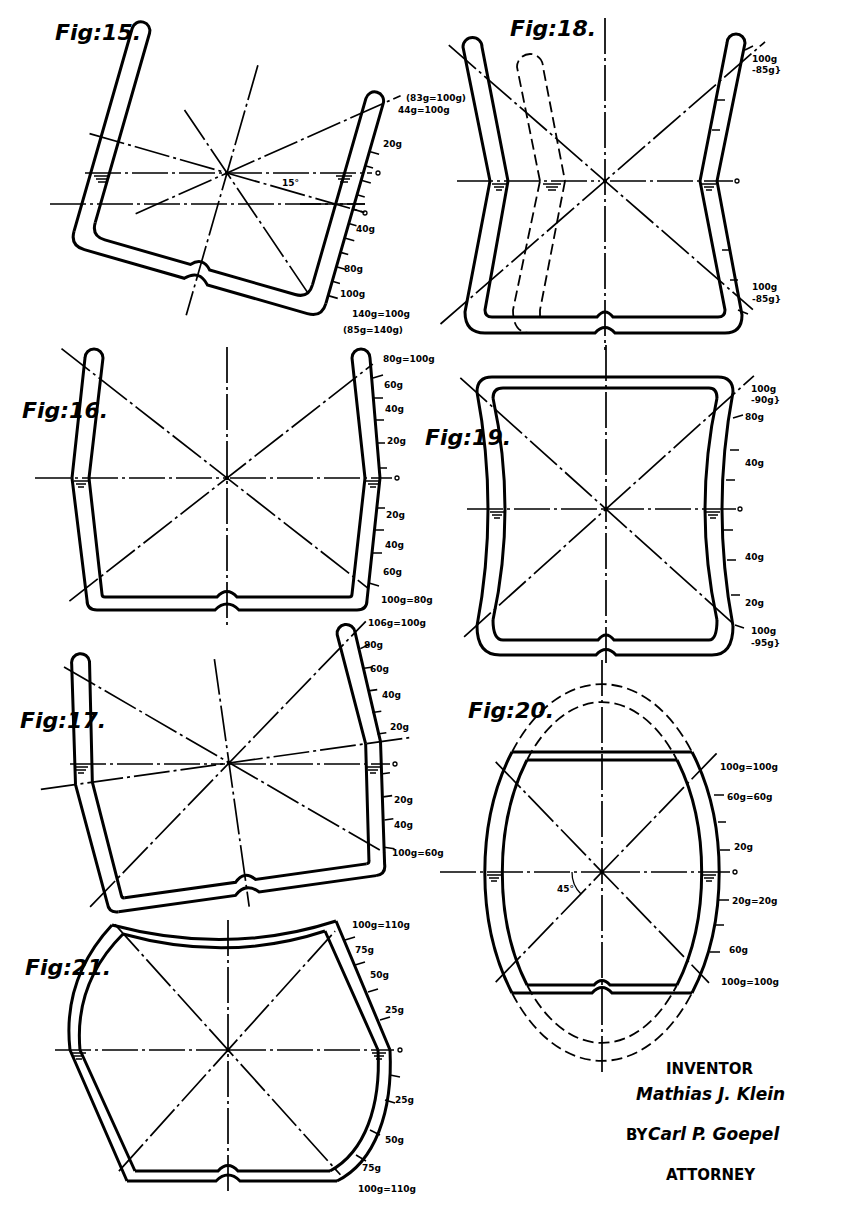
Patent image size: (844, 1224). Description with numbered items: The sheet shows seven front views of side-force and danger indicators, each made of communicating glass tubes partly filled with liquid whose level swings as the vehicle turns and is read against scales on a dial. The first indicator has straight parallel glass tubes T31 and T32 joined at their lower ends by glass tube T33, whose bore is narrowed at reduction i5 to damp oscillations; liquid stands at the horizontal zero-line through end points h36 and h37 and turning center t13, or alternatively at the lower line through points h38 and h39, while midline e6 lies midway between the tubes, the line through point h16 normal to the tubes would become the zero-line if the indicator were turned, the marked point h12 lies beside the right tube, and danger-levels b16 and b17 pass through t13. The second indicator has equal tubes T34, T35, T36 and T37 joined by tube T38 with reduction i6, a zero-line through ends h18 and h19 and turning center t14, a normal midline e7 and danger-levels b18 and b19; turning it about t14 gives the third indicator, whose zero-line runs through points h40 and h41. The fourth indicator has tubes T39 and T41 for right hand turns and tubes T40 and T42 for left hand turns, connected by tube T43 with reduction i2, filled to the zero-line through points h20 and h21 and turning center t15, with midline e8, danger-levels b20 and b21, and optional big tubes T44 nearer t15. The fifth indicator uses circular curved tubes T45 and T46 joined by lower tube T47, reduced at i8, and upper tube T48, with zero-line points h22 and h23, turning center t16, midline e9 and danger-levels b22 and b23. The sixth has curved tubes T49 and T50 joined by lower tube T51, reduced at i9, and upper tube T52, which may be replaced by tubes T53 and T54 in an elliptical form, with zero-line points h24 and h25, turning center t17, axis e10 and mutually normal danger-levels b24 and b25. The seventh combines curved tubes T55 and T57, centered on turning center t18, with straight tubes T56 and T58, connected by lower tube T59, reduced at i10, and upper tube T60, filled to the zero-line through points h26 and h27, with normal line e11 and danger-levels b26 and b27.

In FIG. 15, the communicating glass tube T31 is at (119, 130).
In FIG. 15, the communicating glass tube T32 is at (347, 197).
In FIG. 15, the connecting glass tube T33 is at (200, 268).
In FIG. 15, the danger-level b16 is at (246, 201).
In FIG. 15, the danger-level b17 is at (268, 154).
In FIG. 15, the turning center t13 is at (227, 173).
In FIG. 15, the midline e6 is at (222, 190).
In FIG. 15, the reduced tube portion i5 is at (198, 272).
In FIG. 15, the zero-line end point h36 is at (95, 172).
In FIG. 15, the zero-line end point h37 is at (248, 167).
In FIG. 15, the alternative fill-line end point h38 is at (204, 192).
In FIG. 15, the alternative fill-line end point h39 is at (349, 192).
In FIG. 15, the normal line end point h16 is at (227, 173).
In FIG. 15, the reference point h12 is at (383, 215).
In FIG. 18, the communicating glass tube T39 is at (480, 115).
In FIG. 18, the communicating glass tube T40 is at (482, 215).
In FIG. 18, the communicating glass tube T41 is at (707, 200).
In FIG. 18, the communicating glass tube T42 is at (718, 117).
In FIG. 18, the connecting glass tube T43 is at (670, 300).
In FIG. 18, the big tube T44 is at (565, 152).
In FIG. 18, the danger-level b20 is at (601, 177).
In FIG. 18, the danger-level b21 is at (603, 183).
In FIG. 18, the turning center t15 is at (606, 178).
In FIG. 18, the midline e8 is at (618, 184).
In FIG. 18, the reduced tube portion i2 is at (600, 318).
In FIG. 18, the zero-line end point h20 is at (527, 173).
In FIG. 18, the zero-line end point h21 is at (739, 181).
In FIG. 16, the communicating glass tube T34 is at (87, 413).
In FIG. 17, the communicating glass tube T34 is at (82, 719).
In FIG. 16, the communicating glass tube T35 is at (88, 544).
In FIG. 17, the communicating glass tube T35 is at (101, 847).
In FIG. 16, the communicating glass tube T36 is at (364, 544).
In FIG. 17, the communicating glass tube T36 is at (374, 809).
In FIG. 16, the communicating glass tube T37 is at (366, 413).
In FIG. 17, the communicating glass tube T37 is at (358, 684).
In FIG. 16, the connecting glass tube T38 is at (227, 601).
In FIG. 17, the connecting glass tube T38 is at (246, 884).
In FIG. 16, the danger-level b18 is at (215, 469).
In FIG. 17, the danger-level b18 is at (224, 760).
In FIG. 16, the danger-level b19 is at (355, 418).
In FIG. 17, the danger-level b19 is at (348, 683).
In FIG. 16, the turning center t14 is at (227, 478).
In FIG. 17, the turning center t14 is at (228, 762).
In FIG. 16, the midline e7 is at (238, 486).
In FIG. 17, the midline e7 is at (231, 783).
In FIG. 16, the reduced tube portion i6 is at (227, 601).
In FIG. 17, the reduced tube portion i6 is at (246, 885).
In FIG. 16, the zero-line end point h18 is at (66, 478).
In FIG. 17, the zero-line end point h18 is at (70, 788).
In FIG. 16, the zero-line end point h19 is at (399, 478).
In FIG. 17, the zero-line end point h19 is at (227, 763).
In FIG. 17, the zero-line end point h40 is at (72, 768).
In FIG. 17, the zero-line end point h41 is at (397, 764).
In FIG. 19, the circular curved glass tube T45 is at (500, 481).
In FIG. 19, the circular curved glass tube T46 is at (700, 462).
In FIG. 19, the lower connecting tube T47 is at (546, 648).
In FIG. 19, the upper connecting tube T48 is at (643, 383).
In FIG. 19, the danger-level b22 is at (596, 500).
In FIG. 19, the danger-level b23 is at (609, 506).
In FIG. 19, the turning center t16 is at (608, 505).
In FIG. 19, the midline e9 is at (620, 505).
In FIG. 19, the reduced tube portion i8 is at (609, 637).
In FIG. 19, the zero-line end point h22 is at (530, 503).
In FIG. 19, the zero-line end point h23 is at (742, 509).
In FIG. 20, the circular curved glass tube T49 is at (500, 836).
In FIG. 20, the circular curved glass tube T50 is at (700, 832).
In FIG. 20, the lower connecting tube T51 is at (548, 988).
In FIG. 20, the upper connecting tube T52 is at (587, 758).
In FIG. 20, the substitute lower tube T53 is at (548, 1030).
In FIG. 20, the substitute upper tube T54 is at (668, 712).
In FIG. 20, the danger-level b24 is at (602, 872).
In FIG. 20, the danger-level b25 is at (542, 936).
In FIG. 20, the turning center t17 is at (604, 869).
In FIG. 20, the midline e10 is at (621, 866).
In FIG. 20, the reduced tube portion i9 is at (608, 984).
In FIG. 20, the zero-line end point h24 is at (520, 866).
In FIG. 20, the zero-line end point h25 is at (737, 872).
In FIG. 21, the circular curved glass tube T55 is at (90, 1001).
In FIG. 21, the straight glass tube T56 is at (108, 1113).
In FIG. 21, the circular curved glass tube T57 is at (360, 1112).
In FIG. 21, the straight glass tube T58 is at (340, 992).
In FIG. 21, the lower connecting tube T59 is at (183, 1172).
In FIG. 21, the upper connecting tube T60 is at (197, 942).
In FIG. 21, the danger-level b26 is at (228, 1049).
In FIG. 21, the danger-level b27 is at (154, 1136).
In FIG. 21, the turning center t18 is at (230, 1046).
In FIG. 21, the midline e11 is at (245, 1056).
In FIG. 21, the reduced tube portion i10 is at (236, 1170).
In FIG. 21, the zero-line end point h26 is at (62, 1050).
In FIG. 21, the zero-line end point h27 is at (402, 1050).